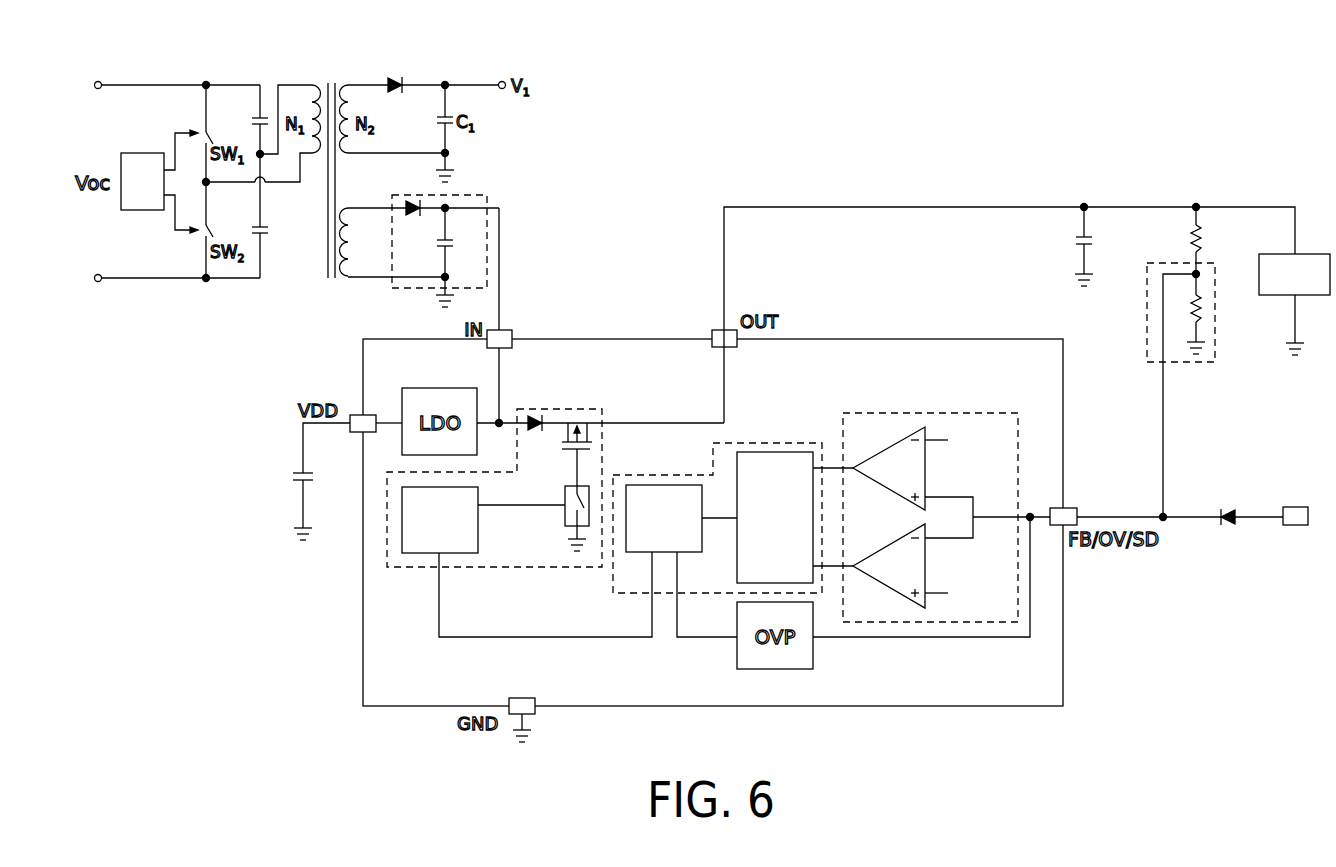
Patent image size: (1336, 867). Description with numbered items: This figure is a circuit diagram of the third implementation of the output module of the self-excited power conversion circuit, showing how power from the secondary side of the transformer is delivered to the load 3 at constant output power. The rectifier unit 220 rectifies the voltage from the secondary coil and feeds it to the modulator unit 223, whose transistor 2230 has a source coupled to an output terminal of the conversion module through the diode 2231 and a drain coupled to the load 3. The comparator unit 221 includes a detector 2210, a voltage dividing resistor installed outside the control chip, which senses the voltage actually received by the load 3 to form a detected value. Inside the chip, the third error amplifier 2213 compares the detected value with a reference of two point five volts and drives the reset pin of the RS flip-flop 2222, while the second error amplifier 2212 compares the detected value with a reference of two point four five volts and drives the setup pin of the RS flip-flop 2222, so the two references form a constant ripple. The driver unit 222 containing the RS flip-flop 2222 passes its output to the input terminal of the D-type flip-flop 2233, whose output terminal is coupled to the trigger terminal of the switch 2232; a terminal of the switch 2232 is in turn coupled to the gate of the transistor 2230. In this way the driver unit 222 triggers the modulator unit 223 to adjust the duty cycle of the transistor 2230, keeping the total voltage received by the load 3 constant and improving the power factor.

The load 3 is at (1310, 254).
The rectifier unit 220 is at (488, 233).
The comparator unit 221 is at (1045, 467).
The detector 2210 is at (1198, 295).
The second error amplifier 2212 is at (946, 467).
The third error amplifier 2213 is at (900, 440).
The driver unit 222 is at (734, 467).
The RS flip-flop 2222 is at (820, 576).
The modulator unit 223 is at (552, 512).
The transistor 2230 is at (587, 433).
The diode 2231 is at (542, 419).
The switch 2232 is at (563, 522).
The D-type flip-flop 2233 is at (418, 553).